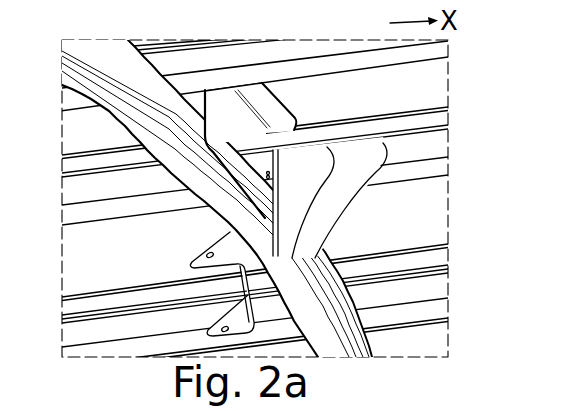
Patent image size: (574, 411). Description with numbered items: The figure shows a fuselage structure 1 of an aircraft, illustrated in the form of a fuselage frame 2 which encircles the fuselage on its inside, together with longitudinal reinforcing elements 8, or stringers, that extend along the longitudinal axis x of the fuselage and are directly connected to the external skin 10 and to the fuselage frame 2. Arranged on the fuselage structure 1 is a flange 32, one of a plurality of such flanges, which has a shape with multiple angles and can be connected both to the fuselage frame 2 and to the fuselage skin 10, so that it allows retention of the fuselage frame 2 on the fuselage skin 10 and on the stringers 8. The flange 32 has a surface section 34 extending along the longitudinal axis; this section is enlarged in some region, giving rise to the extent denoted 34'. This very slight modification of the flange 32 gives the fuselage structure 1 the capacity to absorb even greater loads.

The fuselage structure 1 is at (95, 271).
The fuselage frame 2 is at (262, 334).
The longitudinal reinforcing element 8 is at (438, 146).
The external skin 10 is at (438, 88).
The flange 32 is at (245, 130).
The surface section 34 is at (328, 197).
The enlarged extent of the surface section 34' is at (351, 200).